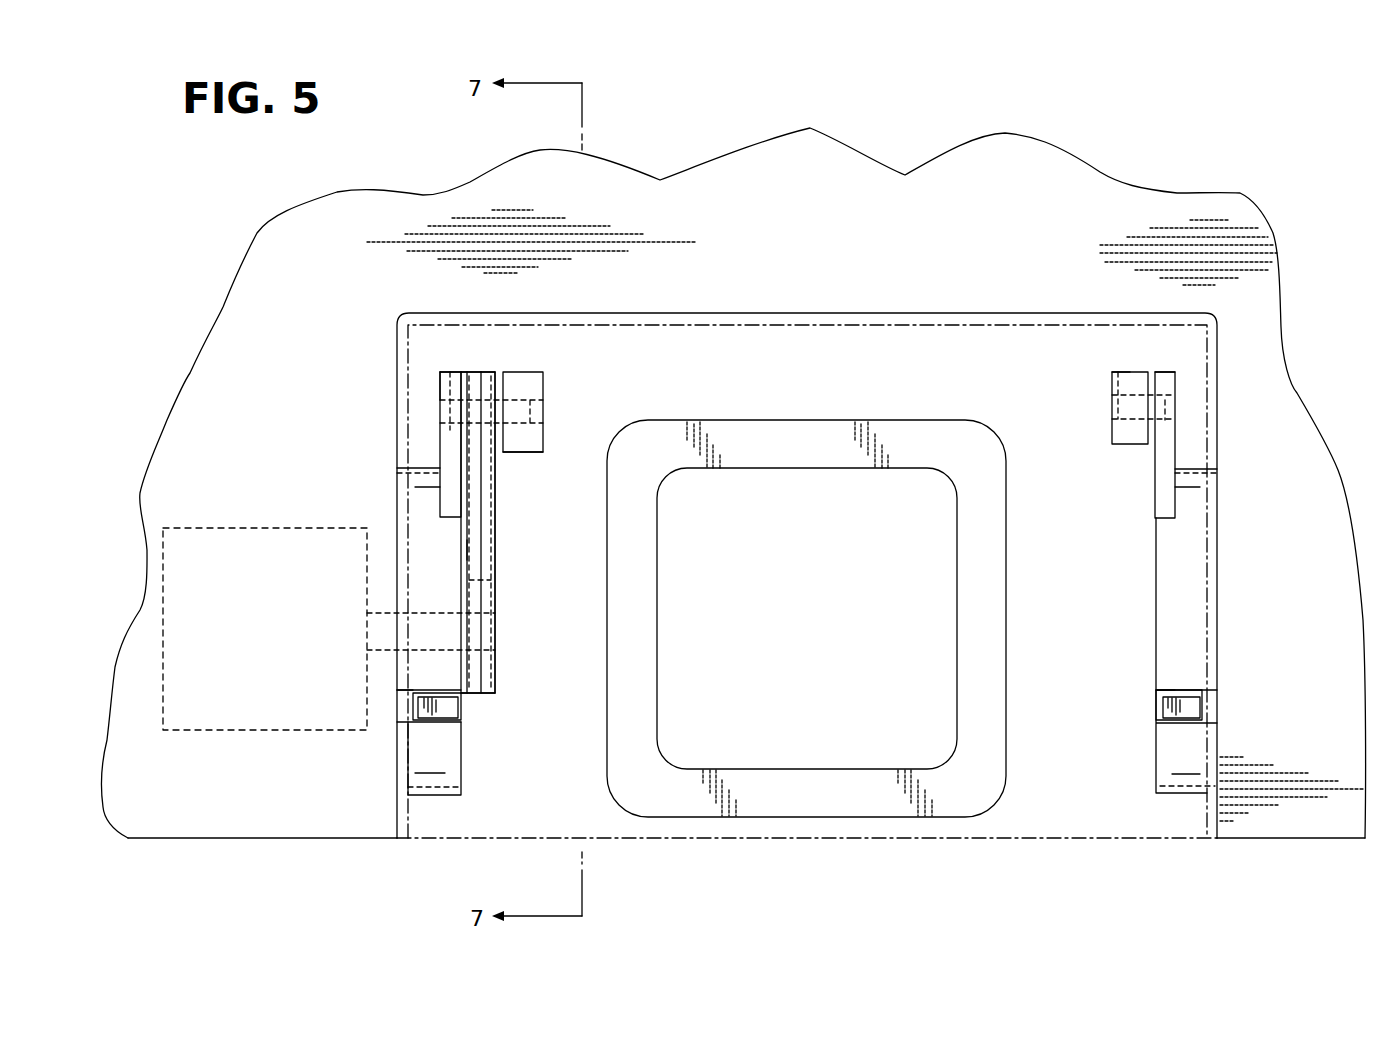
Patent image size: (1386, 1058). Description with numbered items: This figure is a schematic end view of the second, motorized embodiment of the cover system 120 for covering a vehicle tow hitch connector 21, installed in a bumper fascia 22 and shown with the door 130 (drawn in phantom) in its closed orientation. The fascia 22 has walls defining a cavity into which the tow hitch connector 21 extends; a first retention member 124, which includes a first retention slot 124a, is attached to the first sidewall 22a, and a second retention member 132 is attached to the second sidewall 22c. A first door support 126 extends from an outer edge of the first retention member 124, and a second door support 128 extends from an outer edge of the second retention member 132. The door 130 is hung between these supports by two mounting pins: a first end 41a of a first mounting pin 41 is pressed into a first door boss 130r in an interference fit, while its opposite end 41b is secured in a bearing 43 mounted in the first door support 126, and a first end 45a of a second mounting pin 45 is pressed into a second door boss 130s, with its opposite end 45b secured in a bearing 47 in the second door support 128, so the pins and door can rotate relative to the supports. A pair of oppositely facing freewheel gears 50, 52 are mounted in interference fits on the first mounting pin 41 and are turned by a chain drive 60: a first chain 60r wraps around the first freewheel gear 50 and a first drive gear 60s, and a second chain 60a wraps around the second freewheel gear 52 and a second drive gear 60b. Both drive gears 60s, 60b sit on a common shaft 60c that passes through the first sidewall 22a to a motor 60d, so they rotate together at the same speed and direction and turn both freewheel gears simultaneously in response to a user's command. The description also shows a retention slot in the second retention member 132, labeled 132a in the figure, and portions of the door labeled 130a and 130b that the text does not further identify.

The cover system 120 is at (150, 278).
The bumper fascia 22 is at (1282, 848).
The first sidewall 22a is at (397, 440).
The second sidewall 22c is at (1218, 530).
The vehicle tow hitch connector 21 is at (824, 795).
The door 130 is at (795, 322).
The lower left frame block 130a is at (447, 707).
The lower right frame block 130b is at (1160, 705).
The first door boss 130r is at (518, 443).
The second door boss 130s is at (1130, 440).
The chain drive 60 is at (520, 607).
The second chain 60a is at (492, 555).
The second drive gear 60b is at (487, 665).
The shaft 60c is at (385, 613).
The motor 60d is at (258, 731).
The first chain 60r is at (468, 548).
The first drive gear 60s is at (477, 583).
The first mounting pin 41 is at (517, 397).
The first end of first mounting pin 41a is at (547, 407).
The opposite end of first mounting pin 41b is at (440, 400).
The bearing 43 is at (452, 372).
The second mounting pin 45 is at (1110, 413).
The first end of second mounting pin 45a is at (1112, 368).
The opposite end of second mounting pin 45b is at (1173, 387).
The bearing 47 is at (1175, 412).
The first freewheel gear 50 is at (468, 372).
The second freewheel gear 52 is at (490, 372).
The first retention member 124 is at (438, 745).
The first retention slot 124a is at (430, 690).
The first door support 126 is at (452, 443).
The second door support 128 is at (1167, 443).
The second retention member 132 is at (1183, 563).
The lower right bracket flange 132a is at (1175, 692).